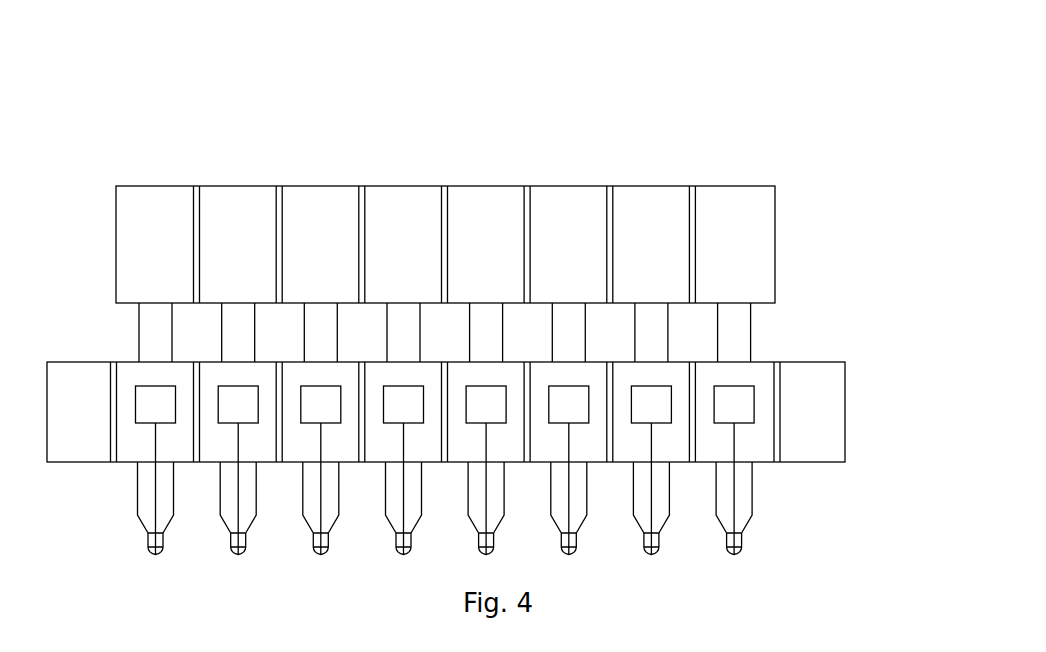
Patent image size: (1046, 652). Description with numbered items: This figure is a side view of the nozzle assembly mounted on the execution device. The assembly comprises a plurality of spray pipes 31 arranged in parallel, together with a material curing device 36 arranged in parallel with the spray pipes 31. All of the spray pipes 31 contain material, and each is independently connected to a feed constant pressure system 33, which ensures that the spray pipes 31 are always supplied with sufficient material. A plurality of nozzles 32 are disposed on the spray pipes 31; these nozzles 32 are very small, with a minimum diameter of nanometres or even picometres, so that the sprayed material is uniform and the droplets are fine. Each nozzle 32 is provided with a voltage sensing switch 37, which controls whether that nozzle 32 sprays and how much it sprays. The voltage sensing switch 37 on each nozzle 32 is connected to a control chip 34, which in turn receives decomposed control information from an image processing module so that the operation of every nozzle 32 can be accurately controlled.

The spray pipe 31 is at (555, 372).
The nozzle 32 is at (740, 493).
The feed constant pressure system 33 is at (760, 243).
The control chip 34 is at (318, 405).
The material curing device 36 is at (68, 413).
The voltage sensing switch 37 is at (737, 542).